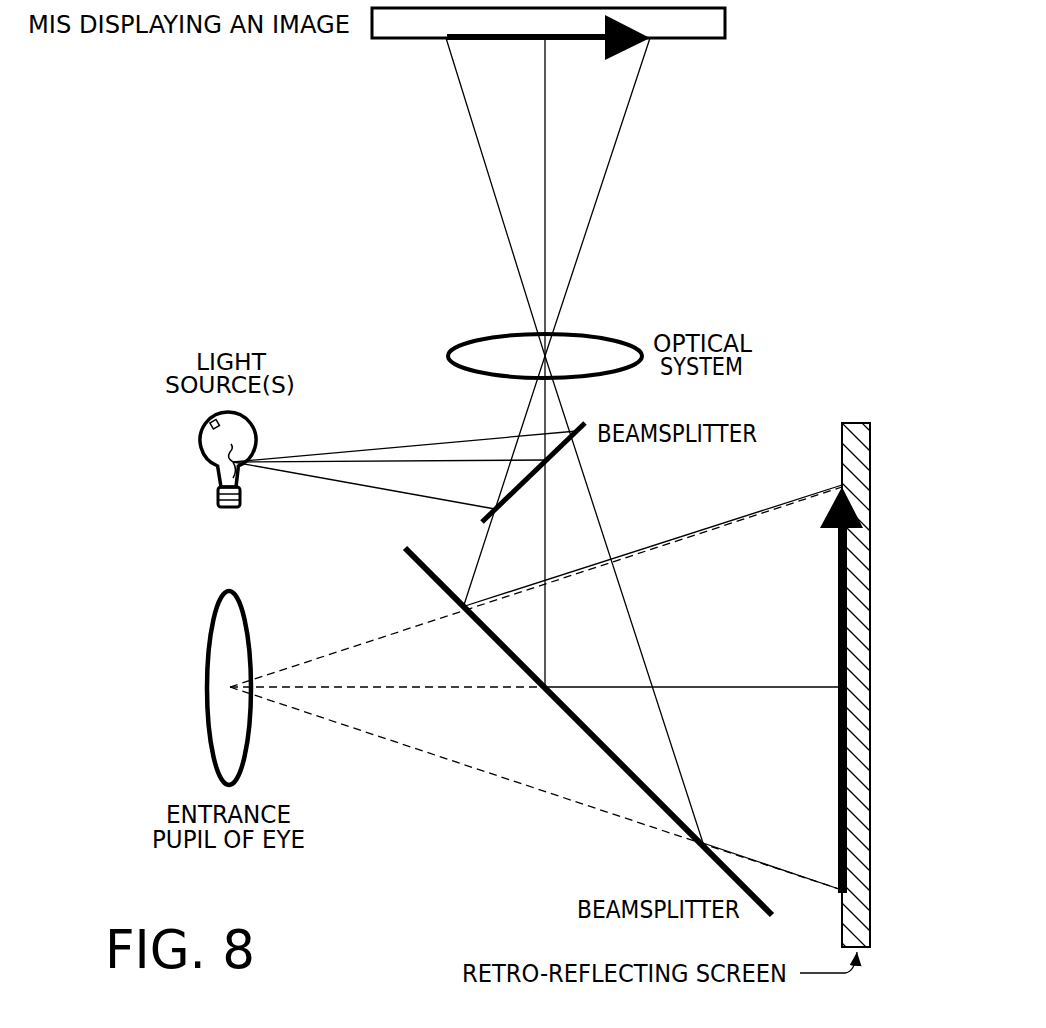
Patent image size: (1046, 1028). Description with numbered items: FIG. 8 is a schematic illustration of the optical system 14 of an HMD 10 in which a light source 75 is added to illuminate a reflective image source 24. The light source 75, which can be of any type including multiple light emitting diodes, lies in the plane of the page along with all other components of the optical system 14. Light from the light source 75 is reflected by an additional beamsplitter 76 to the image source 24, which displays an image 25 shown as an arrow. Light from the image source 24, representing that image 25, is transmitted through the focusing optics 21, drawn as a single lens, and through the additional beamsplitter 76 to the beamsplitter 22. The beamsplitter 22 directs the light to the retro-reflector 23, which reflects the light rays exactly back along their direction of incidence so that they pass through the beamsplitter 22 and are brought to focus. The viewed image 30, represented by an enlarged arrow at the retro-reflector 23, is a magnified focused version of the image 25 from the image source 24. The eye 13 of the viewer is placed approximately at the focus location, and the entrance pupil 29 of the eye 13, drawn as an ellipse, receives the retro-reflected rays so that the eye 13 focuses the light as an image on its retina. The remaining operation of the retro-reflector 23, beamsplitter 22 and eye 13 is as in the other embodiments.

The HMD 10 is at (333, 180).
The eye 13 is at (183, 610).
The optical system 14 is at (438, 253).
The focusing optics 21 is at (438, 343).
The beamsplitter 22 is at (432, 583).
The retro-reflector 23 is at (842, 452).
The image source 24 is at (390, 42).
The image 25 is at (481, 40).
The pupil and lens of the eye 29 is at (245, 612).
The viewed image 30 is at (838, 572).
The light source 75 is at (272, 427).
The additional beamsplitter 76 is at (556, 440).